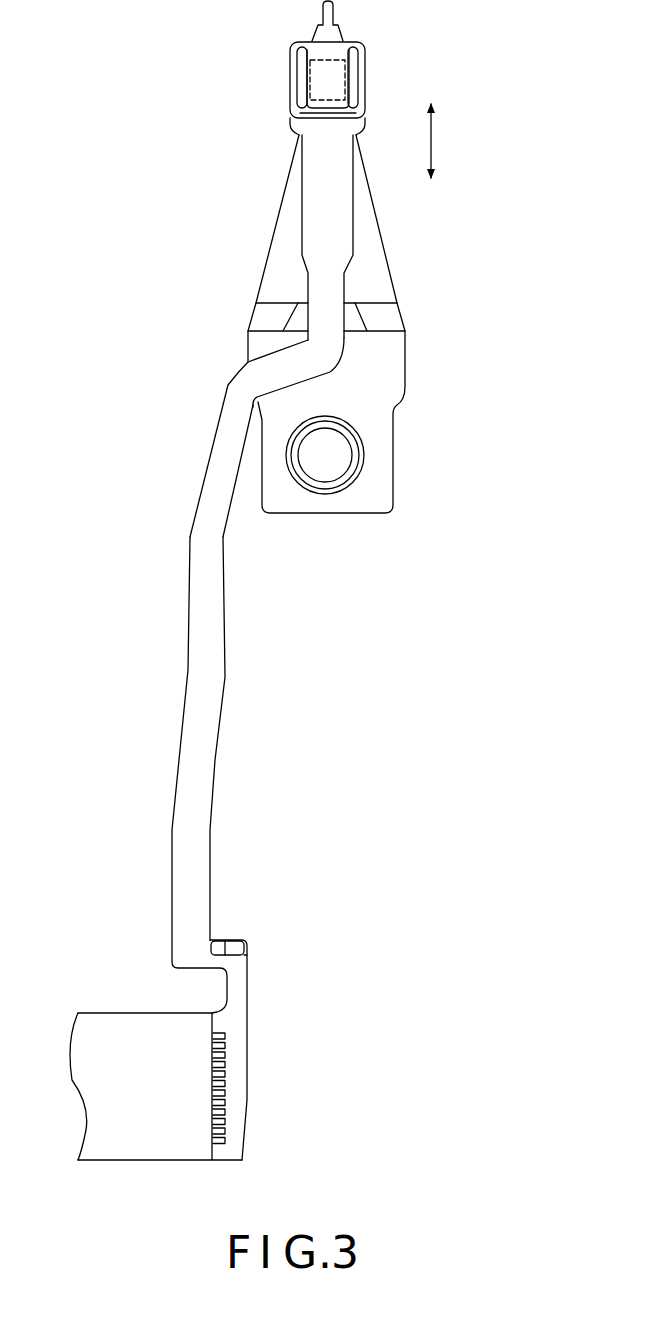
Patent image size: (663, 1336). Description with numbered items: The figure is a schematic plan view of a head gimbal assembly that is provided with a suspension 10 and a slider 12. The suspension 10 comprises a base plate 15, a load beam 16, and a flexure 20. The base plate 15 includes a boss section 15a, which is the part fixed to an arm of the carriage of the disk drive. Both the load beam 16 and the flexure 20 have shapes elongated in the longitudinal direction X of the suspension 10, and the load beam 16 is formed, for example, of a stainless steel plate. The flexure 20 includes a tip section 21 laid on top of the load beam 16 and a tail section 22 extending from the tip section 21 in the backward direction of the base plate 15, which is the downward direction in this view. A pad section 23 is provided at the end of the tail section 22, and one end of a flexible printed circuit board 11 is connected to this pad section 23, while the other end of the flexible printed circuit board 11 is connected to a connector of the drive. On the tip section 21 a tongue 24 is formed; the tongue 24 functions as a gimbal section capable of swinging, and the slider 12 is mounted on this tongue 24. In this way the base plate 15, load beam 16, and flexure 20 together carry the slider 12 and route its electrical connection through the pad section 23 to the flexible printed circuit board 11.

The suspension 10 is at (166, 243).
The flexible printed circuit board 11 is at (107, 1013).
The slider 12 is at (305, 70).
The base plate 15 is at (364, 422).
The boss section 15a is at (365, 455).
The load beam 16 is at (373, 215).
The flexure 20 is at (203, 451).
The tip section 21 is at (306, 178).
The tail section 22 is at (190, 675).
The pad section 23 is at (235, 1078).
The tongue 24 is at (365, 70).